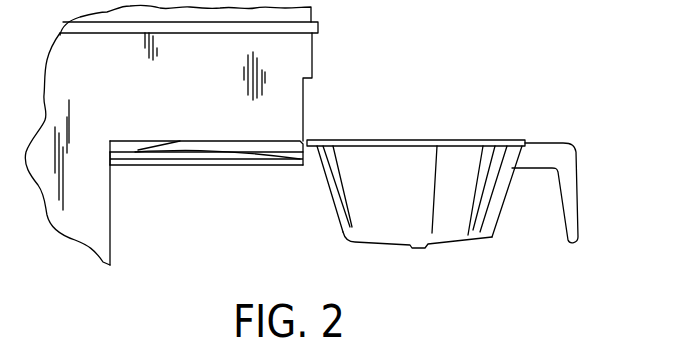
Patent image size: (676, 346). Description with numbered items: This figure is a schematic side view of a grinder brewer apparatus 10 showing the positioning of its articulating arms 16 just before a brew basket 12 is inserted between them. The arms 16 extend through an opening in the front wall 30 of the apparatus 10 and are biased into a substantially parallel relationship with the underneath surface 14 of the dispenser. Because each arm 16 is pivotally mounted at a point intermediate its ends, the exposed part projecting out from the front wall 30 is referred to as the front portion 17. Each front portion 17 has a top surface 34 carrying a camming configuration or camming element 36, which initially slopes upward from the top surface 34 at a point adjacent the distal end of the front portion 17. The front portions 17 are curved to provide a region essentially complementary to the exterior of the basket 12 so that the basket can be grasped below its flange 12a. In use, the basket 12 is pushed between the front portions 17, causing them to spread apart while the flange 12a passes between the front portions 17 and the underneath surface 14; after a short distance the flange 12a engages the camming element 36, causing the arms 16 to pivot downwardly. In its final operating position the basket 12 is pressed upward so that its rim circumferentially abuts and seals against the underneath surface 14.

The apparatus 10 is at (345, 61).
The basket 12 is at (500, 217).
The flange 12a is at (505, 143).
The underneath surface 14 is at (113, 143).
The arms 16 is at (276, 165).
The front portions 17 is at (227, 165).
The front wall 30 is at (110, 258).
The top surface 34 is at (143, 148).
The camming element 36 is at (278, 141).